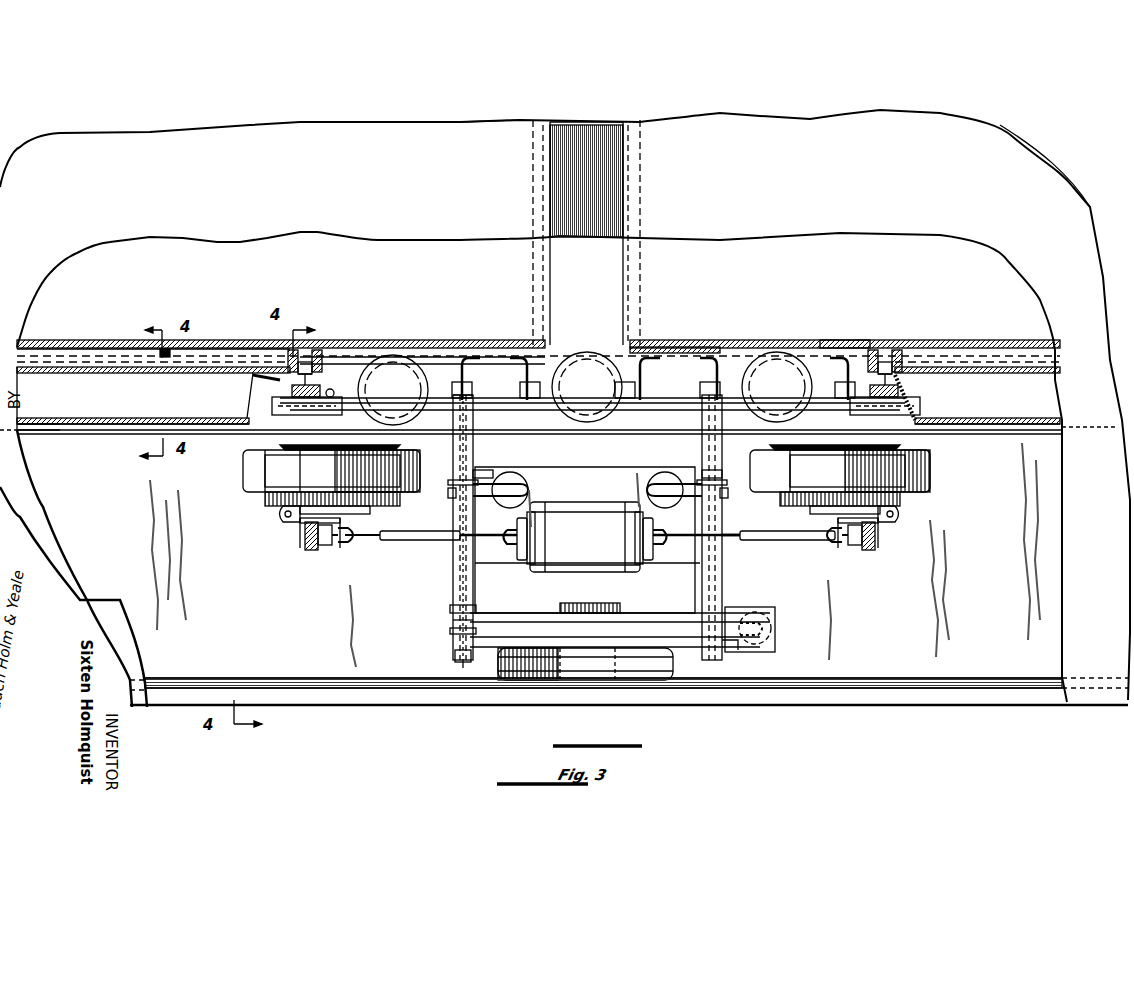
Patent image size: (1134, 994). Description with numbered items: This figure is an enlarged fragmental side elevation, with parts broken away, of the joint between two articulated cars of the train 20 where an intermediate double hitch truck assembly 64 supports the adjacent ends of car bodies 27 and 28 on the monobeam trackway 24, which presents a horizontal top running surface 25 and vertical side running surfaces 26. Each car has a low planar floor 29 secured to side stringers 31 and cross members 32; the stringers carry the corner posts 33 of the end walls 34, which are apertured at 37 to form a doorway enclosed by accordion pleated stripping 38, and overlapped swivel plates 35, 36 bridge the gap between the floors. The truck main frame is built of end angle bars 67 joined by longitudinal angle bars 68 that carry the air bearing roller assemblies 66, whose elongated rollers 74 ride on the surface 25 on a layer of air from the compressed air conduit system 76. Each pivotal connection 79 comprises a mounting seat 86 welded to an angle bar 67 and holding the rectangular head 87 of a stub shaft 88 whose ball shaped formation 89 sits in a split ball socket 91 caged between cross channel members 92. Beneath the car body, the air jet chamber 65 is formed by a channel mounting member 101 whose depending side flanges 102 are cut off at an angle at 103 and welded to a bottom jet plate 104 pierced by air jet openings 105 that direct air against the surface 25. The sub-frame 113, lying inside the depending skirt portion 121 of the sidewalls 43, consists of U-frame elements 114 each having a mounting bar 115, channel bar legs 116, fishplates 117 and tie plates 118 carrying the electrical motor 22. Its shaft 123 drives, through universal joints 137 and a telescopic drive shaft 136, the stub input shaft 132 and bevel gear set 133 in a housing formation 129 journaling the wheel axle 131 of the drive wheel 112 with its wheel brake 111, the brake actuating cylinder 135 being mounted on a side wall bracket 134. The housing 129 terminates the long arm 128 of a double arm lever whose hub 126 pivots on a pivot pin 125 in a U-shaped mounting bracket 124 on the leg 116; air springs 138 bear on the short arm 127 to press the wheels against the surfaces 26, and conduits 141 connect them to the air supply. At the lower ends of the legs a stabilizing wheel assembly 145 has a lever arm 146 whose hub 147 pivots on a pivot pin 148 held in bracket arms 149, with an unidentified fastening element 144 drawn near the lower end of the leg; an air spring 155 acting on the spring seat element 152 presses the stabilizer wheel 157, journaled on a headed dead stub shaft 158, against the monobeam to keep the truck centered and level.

The train 20 is at (478, 116).
The electrical motor 22 is at (605, 502).
The monobeam trackway 24 is at (892, 660).
The top running surface 25 is at (64, 430).
The side running surfaces 26 is at (982, 580).
The car body 27 is at (295, 104).
The car body 28 is at (812, 116).
The floor 29 is at (84, 348).
The side stringers 31 is at (133, 350).
The cross members 32 is at (175, 350).
The corner posts 33 is at (532, 156).
The car body end walls 34 is at (615, 130).
The swivel plate 35 is at (405, 356).
The swivel plate 36 is at (845, 342).
The aperture 37 is at (622, 272).
The accordion pleated flexible sidewall and roofing stripping 38 is at (575, 192).
The car body sidewalls 43 is at (378, 173).
The intermediate double hitch truck assembly 64 is at (448, 606).
The air pressure jet chamber 65 is at (1058, 400).
The air bearing roller assembly 66 is at (393, 356).
The end angle bars 67 is at (308, 415).
The longitudinal angle bars 68 is at (650, 350).
The elongated roller 74 is at (402, 405).
The compressed air conduit system 76 is at (462, 356).
The pivotal connection 79 is at (925, 400).
The mounting seat 86 is at (300, 410).
The rectangular head 87 is at (290, 410).
The stub shaft 88 is at (292, 390).
The ball shaped formation 89 is at (312, 352).
The ball socket 91 is at (305, 352).
The cross channel members 92 is at (282, 358).
The mounting member 101 is at (52, 349).
The depending side flanges 102 is at (175, 398).
The angled cut-off 103 is at (957, 409).
The bottom jet plate 104 is at (145, 432).
The air jet openings 105 is at (110, 424).
The wheel brakes 111 is at (265, 498).
The drive wheels 112 is at (244, 475).
The sub-frame 113 is at (450, 580).
The U-frame elements 114 is at (475, 582).
The mounting bar 115 is at (465, 400).
The channel bar legs 116 is at (468, 560).
The reinforcing fishplates 117 is at (470, 414).
The tie plates 118 is at (582, 485).
The depending skirt portion 121 is at (27, 543).
The motor shaft 123 is at (660, 537).
The U-shaped mounting bracket 124 is at (490, 470).
The pivot pin 125 is at (455, 478).
The hub 126 is at (449, 492).
The short arm 127 is at (476, 490).
The long arm 128 is at (765, 528).
The housing formation 129 is at (312, 550).
The wheel axle 131 is at (312, 525).
The stub input shaft 132 is at (345, 545).
The bevel gear set 133 is at (326, 548).
The side wall bracket 134 is at (302, 528).
The brake actuating cylinder 135 is at (282, 514).
The telescopic drive shaft 136 is at (410, 542).
The universal joints 137 is at (392, 540).
The air springs 138 is at (518, 483).
The conduits 141 is at (468, 442).
The nut 144 is at (455, 655).
The stabilizing wheel assembly 145 is at (705, 652).
The lever arm 146 is at (728, 644).
The hub 147 is at (450, 634).
The pivot pin 148 is at (477, 665).
The bracket arms 149 is at (476, 608).
The spring seat element 152 is at (775, 609).
The air spring 155 is at (765, 630).
The stabilizer wheel 157 is at (565, 682).
The headed dead stub shaft 158 is at (590, 605).